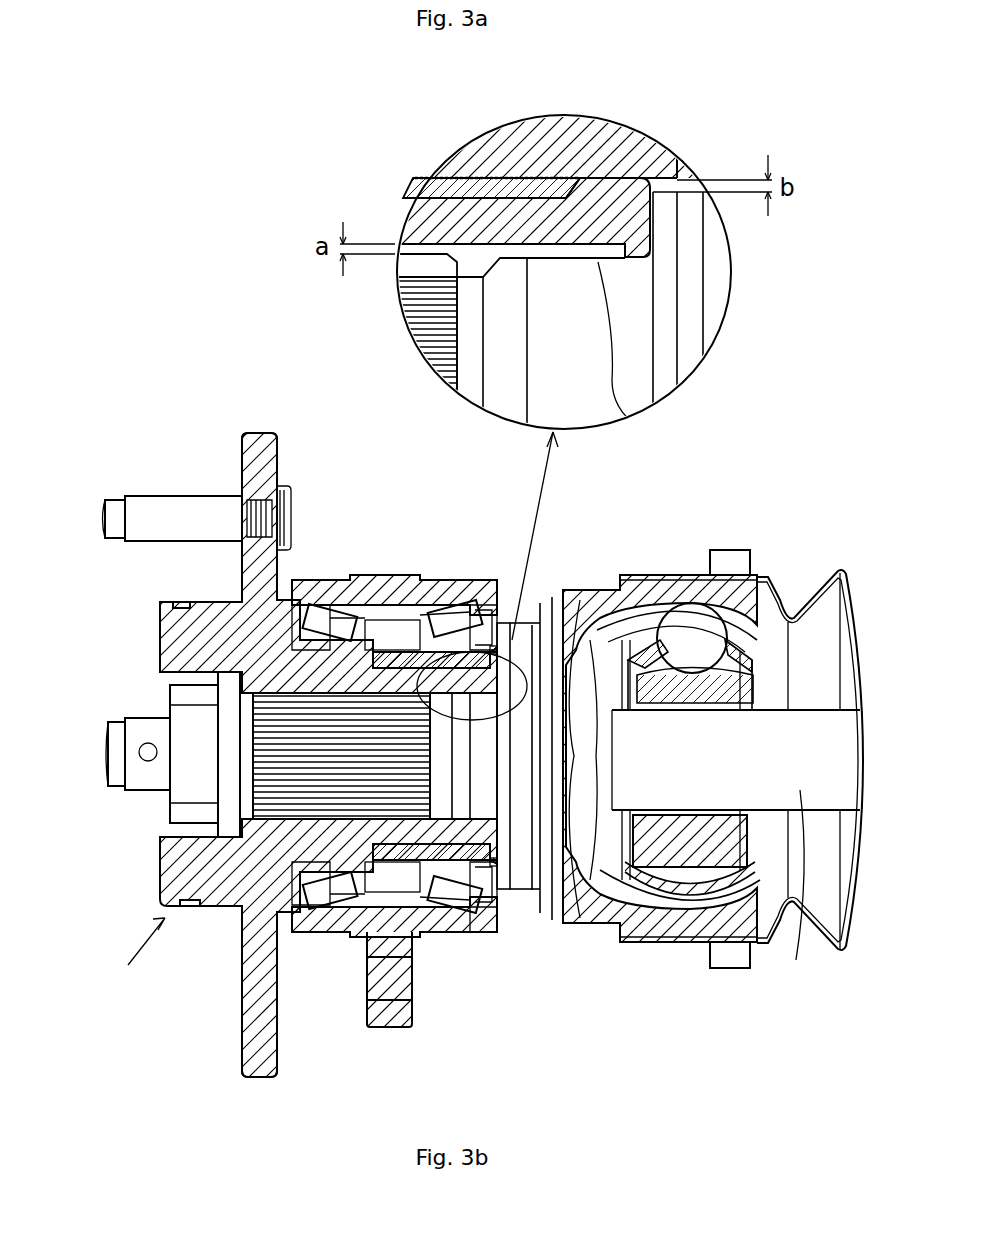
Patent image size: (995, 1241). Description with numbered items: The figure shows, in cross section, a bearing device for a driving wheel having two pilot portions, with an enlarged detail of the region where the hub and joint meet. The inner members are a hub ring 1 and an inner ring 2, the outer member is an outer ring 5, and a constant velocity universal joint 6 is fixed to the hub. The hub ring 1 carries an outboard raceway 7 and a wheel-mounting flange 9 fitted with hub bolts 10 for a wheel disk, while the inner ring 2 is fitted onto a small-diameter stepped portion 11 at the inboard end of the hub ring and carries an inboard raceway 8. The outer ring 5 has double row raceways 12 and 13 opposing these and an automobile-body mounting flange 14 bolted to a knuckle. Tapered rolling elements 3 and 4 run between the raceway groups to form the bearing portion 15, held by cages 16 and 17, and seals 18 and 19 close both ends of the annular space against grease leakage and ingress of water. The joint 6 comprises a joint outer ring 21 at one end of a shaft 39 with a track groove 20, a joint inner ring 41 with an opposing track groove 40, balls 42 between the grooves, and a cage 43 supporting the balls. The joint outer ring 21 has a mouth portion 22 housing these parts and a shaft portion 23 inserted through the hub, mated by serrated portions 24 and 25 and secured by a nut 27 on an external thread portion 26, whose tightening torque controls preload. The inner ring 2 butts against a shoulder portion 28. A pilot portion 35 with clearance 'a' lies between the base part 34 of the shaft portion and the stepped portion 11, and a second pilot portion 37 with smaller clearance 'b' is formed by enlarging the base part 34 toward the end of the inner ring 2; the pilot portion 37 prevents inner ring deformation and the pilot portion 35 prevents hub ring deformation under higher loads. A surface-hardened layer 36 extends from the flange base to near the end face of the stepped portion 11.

In FIG. 3B, the hub ring 1 is at (133, 953).
In FIG. 3A, the inner ring 2 is at (588, 122).
In FIG. 3B, the inner ring 2 is at (500, 655).
In FIG. 3B, the rolling element 3 is at (295, 605).
In FIG. 3B, the rolling element 4 is at (458, 612).
In FIG. 3B, the outer ring 5 is at (385, 590).
In FIG. 3B, the constant velocity universal joint 6 is at (497, 620).
In FIG. 3B, the outboard raceway 7 is at (172, 896).
In FIG. 3B, the inboard raceway 8 is at (478, 905).
In FIG. 3B, the wheel-mounting flange 9 is at (258, 433).
In FIG. 3B, the hub bolt 10 is at (158, 503).
In FIG. 3A, the small-diameter stepped portion 11 is at (503, 176).
In FIG. 3B, the small-diameter stepped portion 11 is at (494, 860).
In FIG. 3B, the raceway 12 is at (338, 600).
In FIG. 3B, the raceway 13 is at (422, 618).
In FIG. 3B, the automobile-body mounting flange 14 is at (385, 1027).
In FIG. 3B, the bearing portion 15 is at (461, 945).
In FIG. 3B, the cage 16 is at (332, 896).
In FIG. 3B, the cage 17 is at (425, 892).
In FIG. 3B, the seal 18 is at (248, 575).
In FIG. 3B, the seal 19 is at (484, 640).
In FIG. 3B, the track groove 20 is at (793, 588).
In FIG. 3B, the joint outer ring 21 is at (694, 958).
In FIG. 3B, the mouth portion 22 is at (660, 585).
In FIG. 3A, the shaft portion 23 is at (440, 386).
In FIG. 3B, the shaft portion 23 is at (340, 800).
In FIG. 3A, the serrated portion 24 is at (420, 325).
In FIG. 3B, the serrated portion 24 is at (290, 690).
In FIG. 3B, the serrated portion 25 is at (228, 800).
In FIG. 3B, the external thread portion 26 is at (188, 705).
In FIG. 3B, the nut 27 is at (152, 740).
In FIG. 3B, the shoulder portion 28 is at (530, 660).
In FIG. 3A, the base part 34 is at (640, 306).
In FIG. 3B, the base part 34 is at (510, 860).
In FIG. 3A, the pilot portion 35 is at (634, 358).
In FIG. 3A, the surface-hardened layer 36 is at (420, 190).
In FIG. 3B, the surface-hardened layer 36 is at (494, 868).
In FIG. 3A, the pilot portion 37 is at (662, 187).
In FIG. 3B, the shaft 39 is at (802, 812).
In FIG. 3B, the track groove 40 is at (718, 677).
In FIG. 3B, the joint inner ring 41 is at (652, 882).
In FIG. 3B, the ball 42 is at (735, 550).
In FIG. 3B, the cage 43 is at (732, 969).